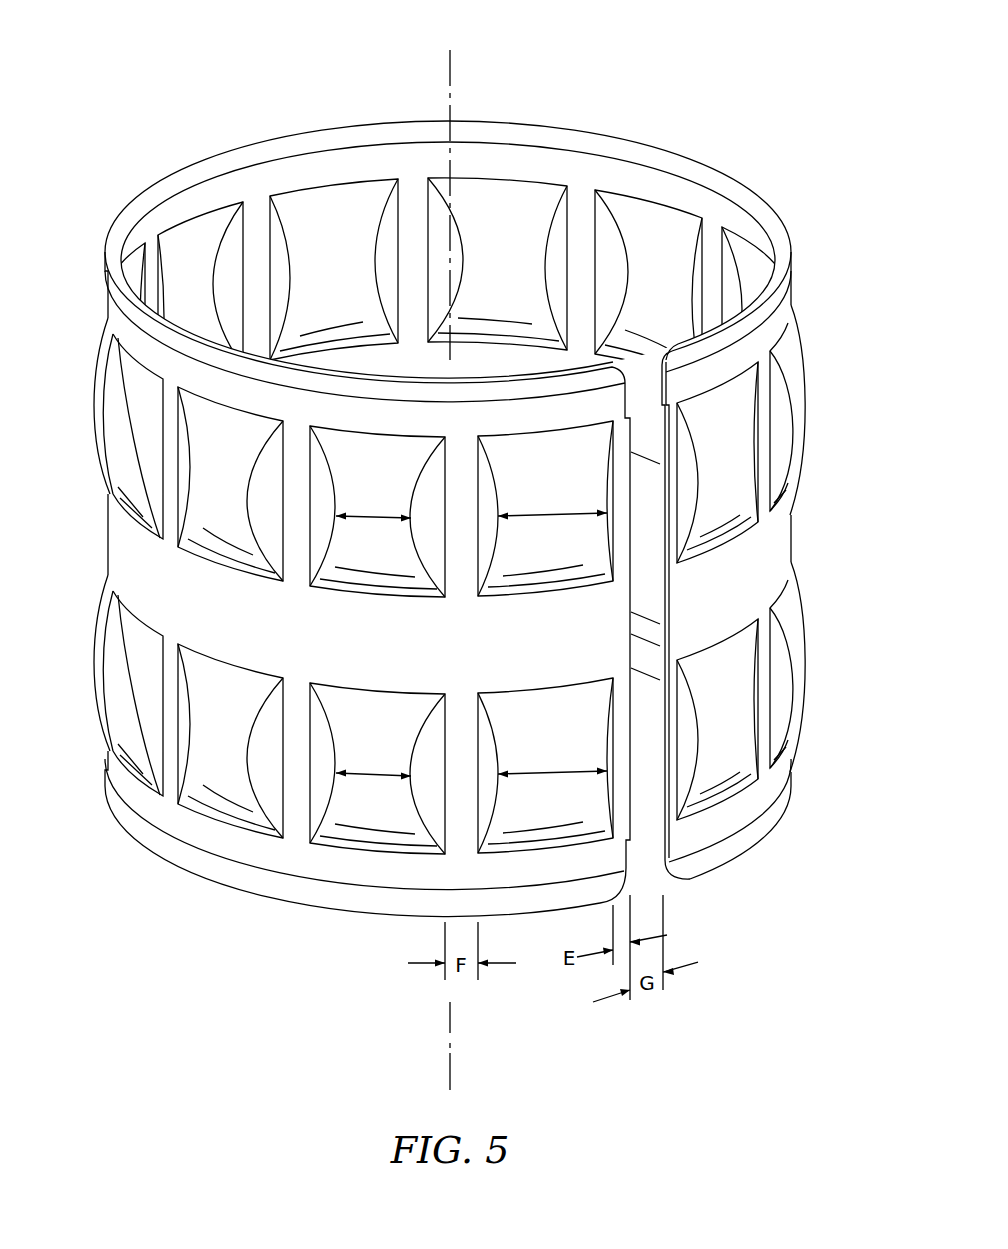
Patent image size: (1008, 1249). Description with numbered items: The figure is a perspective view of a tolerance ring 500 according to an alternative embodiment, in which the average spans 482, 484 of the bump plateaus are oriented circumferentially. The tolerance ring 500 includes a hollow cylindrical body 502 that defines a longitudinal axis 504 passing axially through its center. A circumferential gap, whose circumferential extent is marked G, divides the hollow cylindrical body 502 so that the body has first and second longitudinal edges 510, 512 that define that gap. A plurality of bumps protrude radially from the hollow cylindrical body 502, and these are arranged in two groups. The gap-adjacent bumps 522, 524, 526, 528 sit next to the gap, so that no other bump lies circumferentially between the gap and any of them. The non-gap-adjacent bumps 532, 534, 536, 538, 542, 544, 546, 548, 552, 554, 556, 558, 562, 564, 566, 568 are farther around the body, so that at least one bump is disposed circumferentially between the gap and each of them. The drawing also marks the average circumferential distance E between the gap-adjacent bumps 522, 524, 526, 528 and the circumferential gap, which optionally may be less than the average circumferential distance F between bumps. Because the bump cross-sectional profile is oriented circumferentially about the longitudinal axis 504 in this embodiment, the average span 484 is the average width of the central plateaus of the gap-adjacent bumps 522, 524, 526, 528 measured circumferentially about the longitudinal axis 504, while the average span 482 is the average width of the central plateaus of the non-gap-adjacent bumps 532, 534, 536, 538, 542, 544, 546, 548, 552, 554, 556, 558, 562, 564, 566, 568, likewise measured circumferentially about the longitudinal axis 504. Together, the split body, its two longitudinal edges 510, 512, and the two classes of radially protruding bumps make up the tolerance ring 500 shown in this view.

The tolerance ring 500 is at (203, 58).
The hollow cylindrical body 502 is at (790, 526).
The longitudinal axis 504 is at (450, 62).
The first longitudinal edge 510 is at (632, 592).
The second longitudinal edge 512 is at (655, 641).
The gap-adjacent bump 522 is at (535, 582).
The gap-adjacent bump 524 is at (510, 718).
The gap-adjacent bump 526 is at (738, 530).
The gap-adjacent bump 528 is at (718, 683).
The non-gap-adjacent bump 532 is at (340, 582).
The non-gap-adjacent bump 534 is at (387, 717).
The non-gap-adjacent bump 536 is at (208, 550).
The non-gap-adjacent bump 538 is at (240, 690).
The non-gap-adjacent bump 542 is at (808, 396).
The non-gap-adjacent bump 544 is at (808, 682).
The non-gap-adjacent bump 546 is at (655, 237).
The non-gap-adjacent bump 548 is at (645, 538).
The non-gap-adjacent bump 552 is at (500, 200).
The non-gap-adjacent bump 554 is at (322, 215).
The non-gap-adjacent bump 556 is at (752, 272).
The non-gap-adjacent bump 558 is at (197, 250).
The non-gap-adjacent bump 562 is at (117, 418).
The non-gap-adjacent bump 564 is at (125, 637).
The non-gap-adjacent bump 566 is at (138, 262).
The non-gap-adjacent bump 568 is at (97, 627).
The average span 482 is at (373, 515).
The average span 484 is at (550, 512).